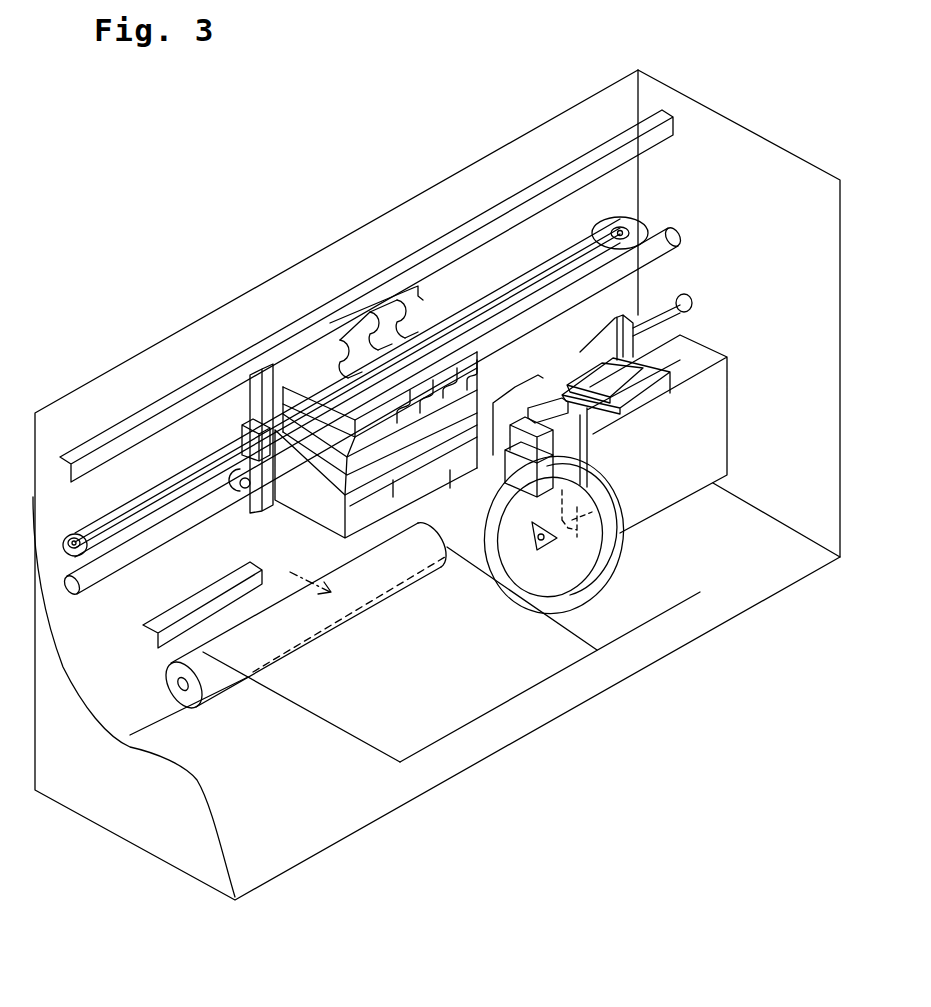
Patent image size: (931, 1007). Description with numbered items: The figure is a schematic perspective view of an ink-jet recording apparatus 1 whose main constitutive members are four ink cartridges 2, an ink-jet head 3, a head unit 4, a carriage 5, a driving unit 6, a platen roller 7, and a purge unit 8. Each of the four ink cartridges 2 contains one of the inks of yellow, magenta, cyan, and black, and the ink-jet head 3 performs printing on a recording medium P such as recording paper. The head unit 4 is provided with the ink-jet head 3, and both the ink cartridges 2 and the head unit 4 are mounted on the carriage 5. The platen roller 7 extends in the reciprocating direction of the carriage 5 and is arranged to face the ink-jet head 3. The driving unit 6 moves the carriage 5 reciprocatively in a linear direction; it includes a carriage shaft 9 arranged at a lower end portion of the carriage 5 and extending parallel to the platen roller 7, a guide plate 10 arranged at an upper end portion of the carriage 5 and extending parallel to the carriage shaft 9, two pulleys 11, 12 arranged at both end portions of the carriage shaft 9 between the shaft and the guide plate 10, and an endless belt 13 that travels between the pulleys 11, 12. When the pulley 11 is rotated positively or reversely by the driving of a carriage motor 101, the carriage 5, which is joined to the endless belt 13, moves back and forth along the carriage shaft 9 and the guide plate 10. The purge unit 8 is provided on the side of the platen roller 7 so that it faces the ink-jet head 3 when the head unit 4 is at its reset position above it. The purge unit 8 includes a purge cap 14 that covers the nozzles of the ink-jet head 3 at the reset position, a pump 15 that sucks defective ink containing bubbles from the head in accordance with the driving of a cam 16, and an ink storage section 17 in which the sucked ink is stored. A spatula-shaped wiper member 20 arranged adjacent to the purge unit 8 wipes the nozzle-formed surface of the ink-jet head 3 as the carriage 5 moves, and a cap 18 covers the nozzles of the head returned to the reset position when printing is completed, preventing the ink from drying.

The ink-jet recording apparatus 1 is at (367, 146).
The ink cartridge 2 is at (377, 353).
The ink-jet head 3 is at (428, 497).
The head unit 4 is at (305, 534).
The carriage 5 is at (260, 392).
The driving unit 6 is at (735, 231).
The platen roller 7 is at (220, 676).
The purge unit 8 is at (787, 462).
The carriage shaft 9 is at (675, 238).
The guide plate 10 is at (659, 113).
The pulley 11 is at (615, 220).
The pulley 12 is at (69, 536).
The endless belt 13 is at (546, 272).
The purge cap 14 is at (608, 405).
The pump 15 is at (580, 502).
The cam 16 is at (578, 574).
The ink storage section 17 is at (703, 463).
The cap 18 is at (705, 346).
The wiper member 20 is at (528, 442).
The carriage motor 101 is at (640, 221).
The recording medium P is at (388, 735).